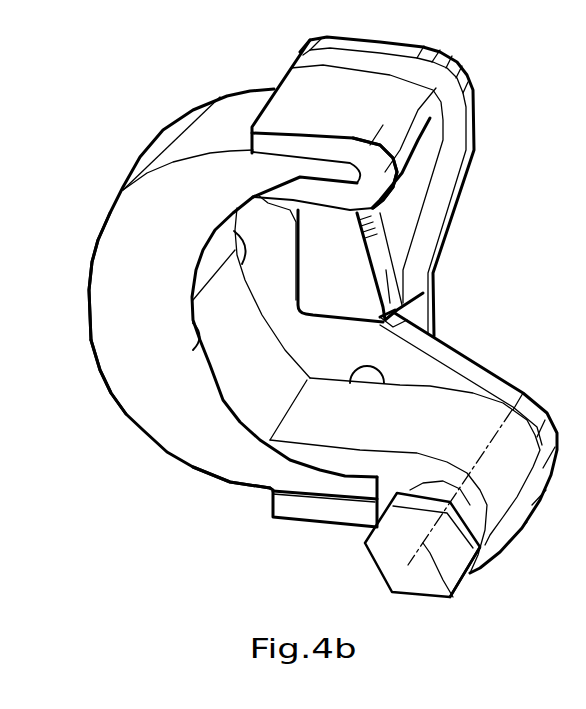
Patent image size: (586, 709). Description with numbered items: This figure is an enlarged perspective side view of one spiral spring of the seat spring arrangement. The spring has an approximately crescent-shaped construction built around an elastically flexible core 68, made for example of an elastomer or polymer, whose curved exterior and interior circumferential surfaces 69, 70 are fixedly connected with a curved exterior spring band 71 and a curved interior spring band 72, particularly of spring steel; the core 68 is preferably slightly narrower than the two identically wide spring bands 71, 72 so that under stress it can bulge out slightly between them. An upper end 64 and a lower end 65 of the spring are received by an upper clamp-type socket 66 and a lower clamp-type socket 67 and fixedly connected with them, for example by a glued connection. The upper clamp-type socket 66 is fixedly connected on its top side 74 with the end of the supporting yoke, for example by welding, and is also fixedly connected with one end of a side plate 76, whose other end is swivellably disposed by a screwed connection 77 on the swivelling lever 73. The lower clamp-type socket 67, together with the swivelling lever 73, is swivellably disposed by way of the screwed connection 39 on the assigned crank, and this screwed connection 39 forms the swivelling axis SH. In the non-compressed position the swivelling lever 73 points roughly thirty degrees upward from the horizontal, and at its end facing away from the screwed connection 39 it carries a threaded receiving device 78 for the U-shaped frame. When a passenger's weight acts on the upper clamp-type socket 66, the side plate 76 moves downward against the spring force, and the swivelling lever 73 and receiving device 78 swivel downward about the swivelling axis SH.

The screwed connection 39 is at (372, 551).
The upper end 64 is at (274, 84).
The lower end 65 is at (252, 494).
The upper clamp-type socket 66 is at (423, 123).
The lower clamp-type socket 67 is at (408, 432).
The elastically flexible core 68 is at (134, 246).
The exterior circumferential surface 69 is at (193, 350).
The interior circumferential surface 70 is at (89, 304).
The exterior spring band 71 is at (224, 378).
The interior spring band 72 is at (107, 384).
The swivelling lever 73 is at (450, 355).
The top side 74 is at (320, 106).
The side plate 76 is at (319, 278).
The screwed connection 77 is at (357, 367).
The receiving device 78 is at (255, 300).
The swivelling axis SH is at (450, 597).